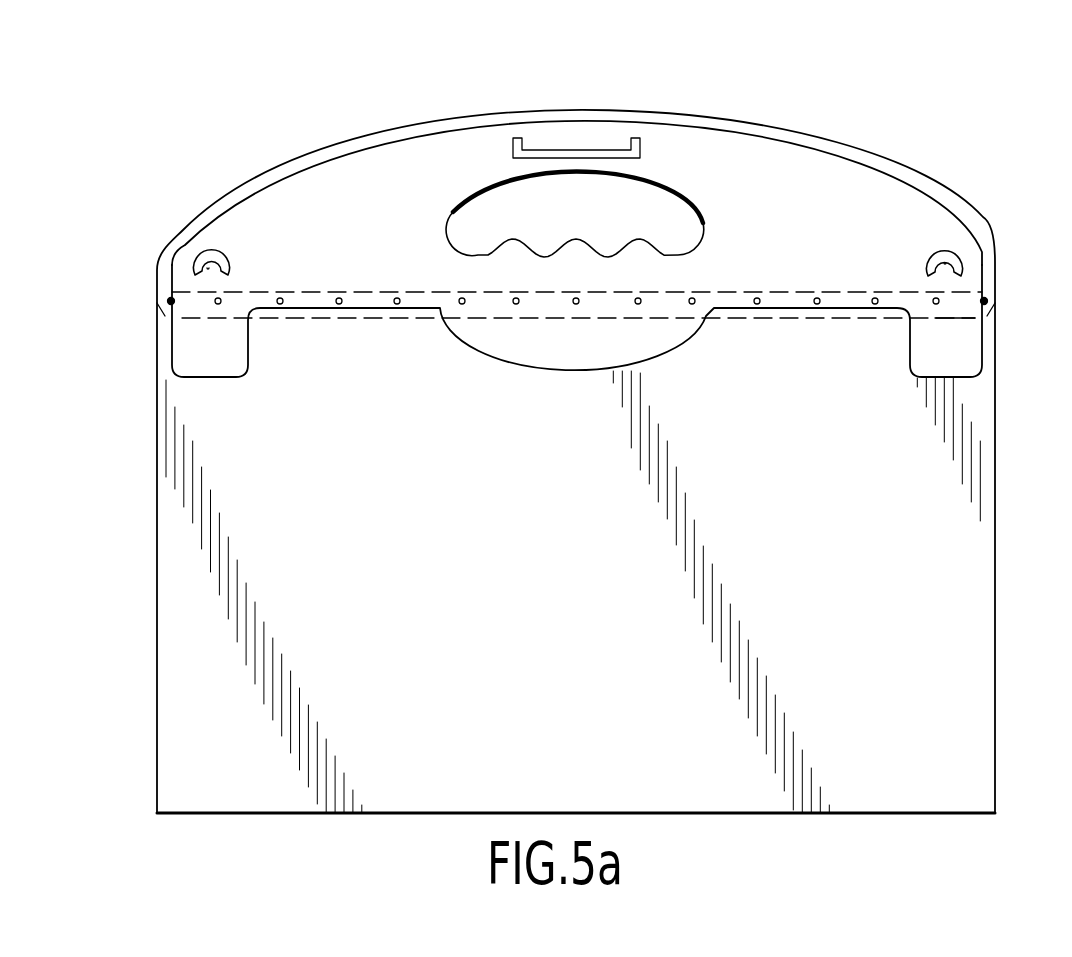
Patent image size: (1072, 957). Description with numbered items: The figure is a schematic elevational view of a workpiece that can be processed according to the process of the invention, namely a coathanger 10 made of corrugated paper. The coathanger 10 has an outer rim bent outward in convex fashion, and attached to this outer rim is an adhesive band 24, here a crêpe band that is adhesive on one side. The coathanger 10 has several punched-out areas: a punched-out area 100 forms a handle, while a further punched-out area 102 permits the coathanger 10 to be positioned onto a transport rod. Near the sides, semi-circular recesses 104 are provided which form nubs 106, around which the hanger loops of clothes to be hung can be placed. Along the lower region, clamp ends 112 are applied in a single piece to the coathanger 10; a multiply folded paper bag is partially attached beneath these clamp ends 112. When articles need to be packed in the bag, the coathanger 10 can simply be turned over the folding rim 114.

The coathanger 10 is at (847, 191).
The adhesive band 24 is at (687, 127).
The punched-out area 100 is at (667, 218).
The punched-out area 102 is at (603, 150).
The semi-circular recesses 104 is at (196, 256).
The nubs 106 is at (208, 270).
The clamp ends 112 is at (235, 355).
The folding rim 114 is at (942, 320).